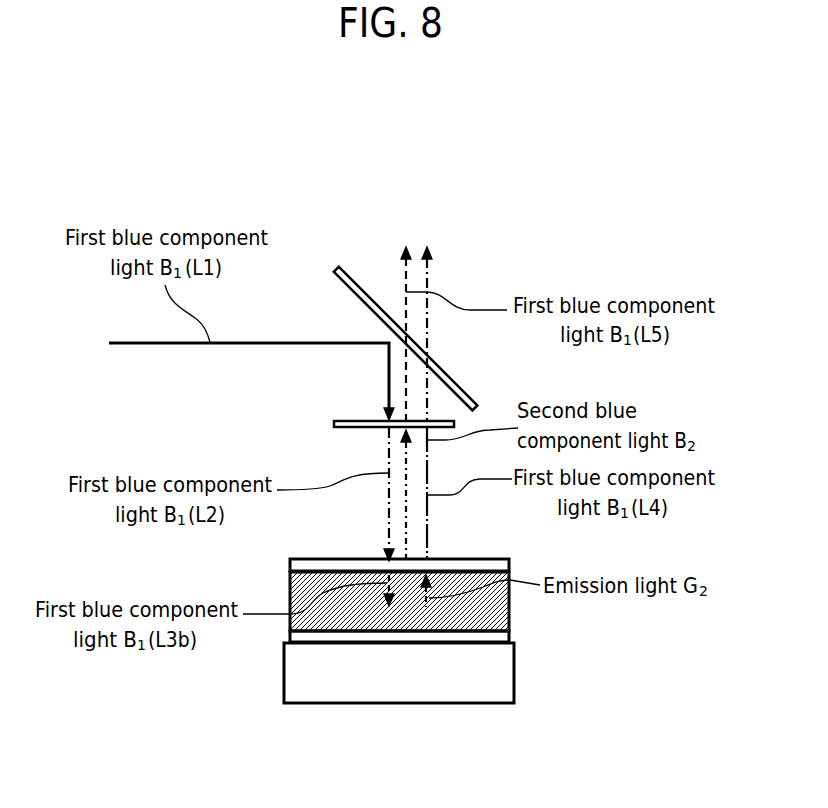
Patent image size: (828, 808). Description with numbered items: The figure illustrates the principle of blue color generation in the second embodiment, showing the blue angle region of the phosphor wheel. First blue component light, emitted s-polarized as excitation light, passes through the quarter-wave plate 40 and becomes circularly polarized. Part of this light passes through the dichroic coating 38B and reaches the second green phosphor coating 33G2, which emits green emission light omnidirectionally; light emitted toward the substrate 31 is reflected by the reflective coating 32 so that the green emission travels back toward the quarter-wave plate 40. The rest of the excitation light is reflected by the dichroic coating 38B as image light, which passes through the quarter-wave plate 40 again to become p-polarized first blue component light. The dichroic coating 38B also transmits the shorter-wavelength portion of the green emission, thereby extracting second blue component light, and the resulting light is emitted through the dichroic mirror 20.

The dichroic mirror 20 is at (338, 268).
The quarter-wave plate 40 is at (332, 425).
The dichroic coating 38B is at (495, 566).
The second green phosphor coating 33G2 is at (497, 608).
The reflective coating 32 is at (493, 638).
The substrate 31 is at (497, 690).